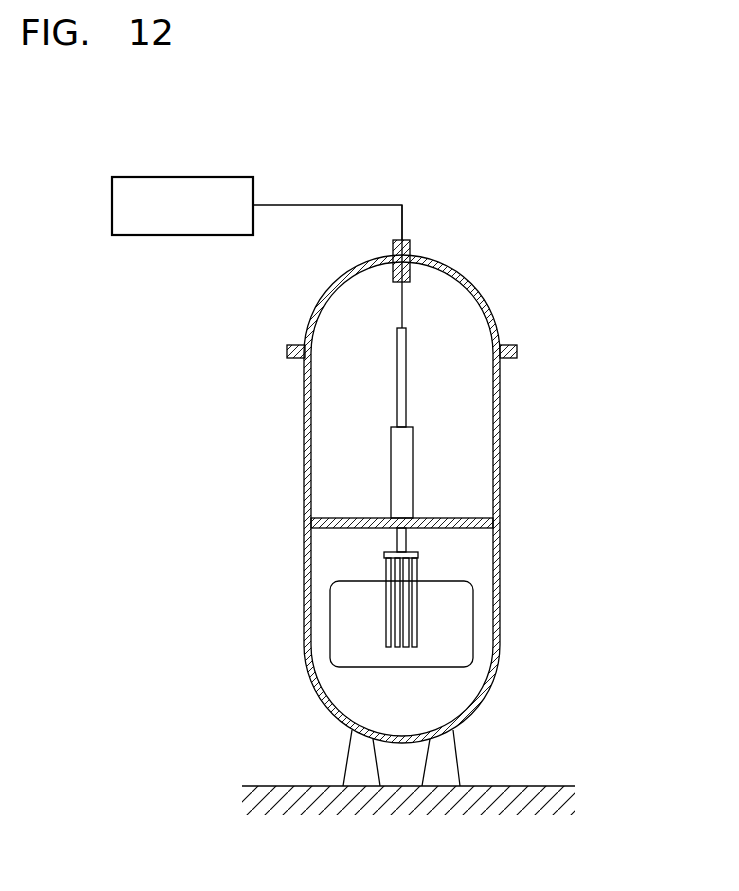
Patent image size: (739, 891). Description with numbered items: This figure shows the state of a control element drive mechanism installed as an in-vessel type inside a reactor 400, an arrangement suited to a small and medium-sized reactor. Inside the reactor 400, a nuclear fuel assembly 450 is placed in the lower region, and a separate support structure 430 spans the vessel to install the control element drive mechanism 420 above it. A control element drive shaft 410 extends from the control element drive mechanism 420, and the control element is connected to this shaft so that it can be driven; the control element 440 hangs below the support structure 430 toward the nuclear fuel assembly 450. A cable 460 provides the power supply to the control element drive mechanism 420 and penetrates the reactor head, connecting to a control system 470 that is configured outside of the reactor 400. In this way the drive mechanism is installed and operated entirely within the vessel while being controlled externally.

The reactor 400 is at (462, 275).
The control element drive shaft 410 is at (406, 390).
The control element drive mechanism 420 is at (405, 474).
The support structure 430 is at (493, 523).
The control rod assembly 440 is at (417, 569).
The nuclear fuel assembly 450 is at (466, 622).
The cable 460 is at (400, 312).
The control system 470 is at (182, 235).